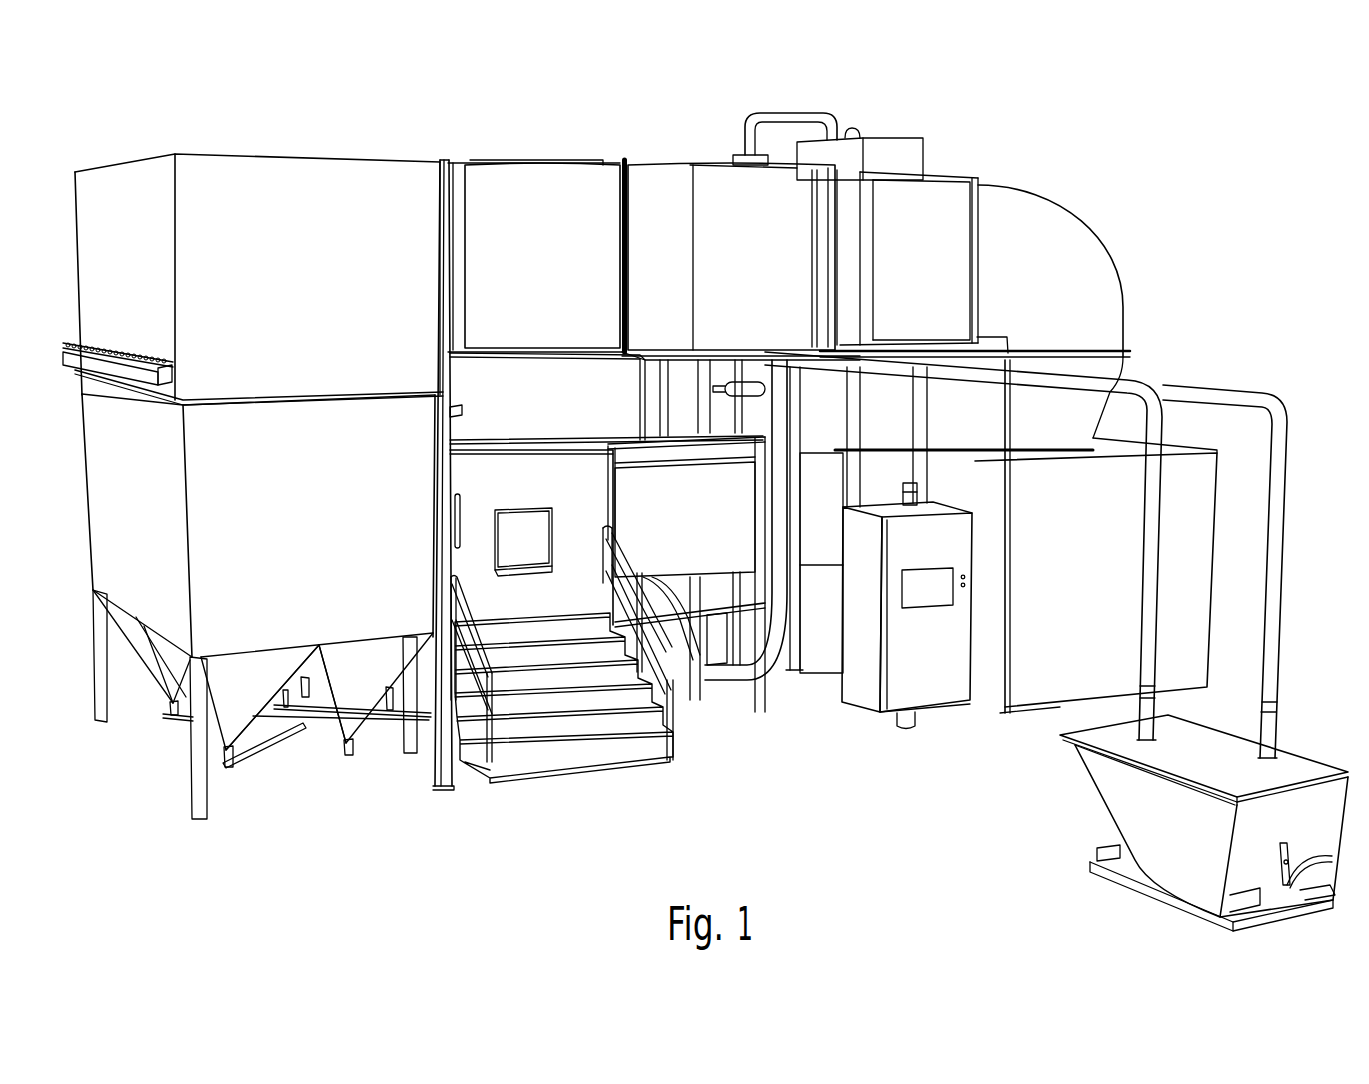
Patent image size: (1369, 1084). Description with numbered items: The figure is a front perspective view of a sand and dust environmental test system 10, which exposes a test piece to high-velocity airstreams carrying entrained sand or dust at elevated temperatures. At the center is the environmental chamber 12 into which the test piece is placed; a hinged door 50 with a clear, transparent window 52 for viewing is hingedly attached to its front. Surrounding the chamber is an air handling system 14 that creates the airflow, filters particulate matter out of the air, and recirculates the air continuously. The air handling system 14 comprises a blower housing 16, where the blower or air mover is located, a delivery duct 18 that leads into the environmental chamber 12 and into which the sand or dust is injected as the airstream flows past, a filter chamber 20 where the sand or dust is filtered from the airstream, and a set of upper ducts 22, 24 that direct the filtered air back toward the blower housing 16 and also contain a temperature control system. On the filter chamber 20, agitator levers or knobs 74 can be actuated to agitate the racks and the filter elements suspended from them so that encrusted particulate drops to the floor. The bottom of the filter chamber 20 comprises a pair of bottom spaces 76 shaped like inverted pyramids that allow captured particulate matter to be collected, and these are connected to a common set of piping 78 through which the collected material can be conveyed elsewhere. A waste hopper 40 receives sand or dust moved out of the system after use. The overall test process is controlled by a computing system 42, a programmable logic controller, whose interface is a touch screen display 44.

The sand and dust environmental test system 10 is at (500, 132).
The environmental chamber 12 is at (523, 466).
The air handling system 14 is at (242, 148).
The blower housing 16 is at (1200, 503).
The delivery duct 18 is at (808, 555).
The filter chamber 20 is at (195, 519).
The upper duct 22 is at (444, 168).
The upper duct 24 is at (585, 183).
The waste hopper 40 is at (1112, 793).
The computing system 42 is at (922, 688).
The touch screen display 44 is at (922, 598).
The hinged door 50 is at (575, 468).
The window 52 is at (508, 518).
The agitator levers or knobs 74 is at (127, 345).
The bottom spaces 76 is at (236, 727).
The piping 78 is at (309, 732).